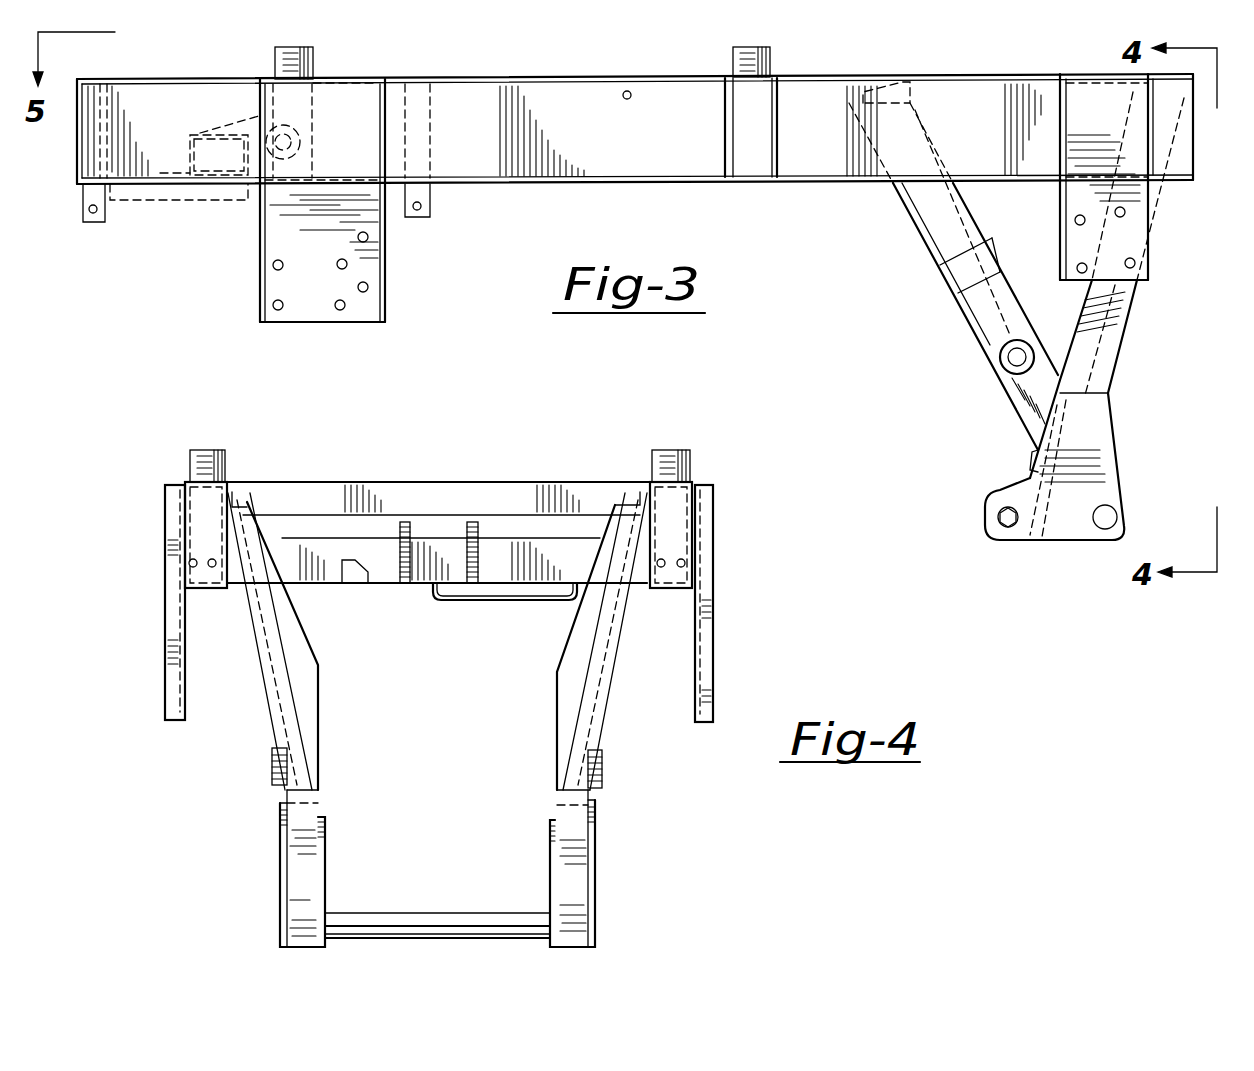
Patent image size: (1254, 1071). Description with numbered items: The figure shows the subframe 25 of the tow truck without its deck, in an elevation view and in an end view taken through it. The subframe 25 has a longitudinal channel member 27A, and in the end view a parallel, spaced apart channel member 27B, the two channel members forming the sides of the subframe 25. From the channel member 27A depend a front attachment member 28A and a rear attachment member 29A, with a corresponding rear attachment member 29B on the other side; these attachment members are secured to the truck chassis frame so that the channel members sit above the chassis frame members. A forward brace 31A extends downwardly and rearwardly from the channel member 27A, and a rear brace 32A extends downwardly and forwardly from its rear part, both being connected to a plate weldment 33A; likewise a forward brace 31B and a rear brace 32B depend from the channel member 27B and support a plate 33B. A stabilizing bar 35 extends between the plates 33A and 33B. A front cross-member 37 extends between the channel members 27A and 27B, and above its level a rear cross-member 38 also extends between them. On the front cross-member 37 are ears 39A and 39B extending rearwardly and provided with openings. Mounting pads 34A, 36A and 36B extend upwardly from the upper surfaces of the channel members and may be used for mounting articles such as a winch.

In FIG. 3, the subframe 25 is at (826, 194).
In FIG. 4, the subframe 25 is at (613, 448).
In FIG. 3, the longitudinal channel member 27A is at (673, 152).
In FIG. 4, the longitudinal channel member 27A is at (185, 484).
In FIG. 4, the channel member 27B is at (678, 502).
In FIG. 3, the front attachment member 28A is at (370, 285).
In FIG. 3, the rear attachment member 29A is at (1113, 245).
In FIG. 4, the rear attachment member 29A is at (172, 697).
In FIG. 4, the rear attachment member 29B is at (705, 668).
In FIG. 3, the forward brace 31A is at (993, 307).
In FIG. 4, the forward brace 31A is at (312, 660).
In FIG. 4, the forward brace 31B is at (575, 645).
In FIG. 3, the rear brace 32A is at (1097, 360).
In FIG. 4, the rear brace 32A is at (268, 694).
In FIG. 4, the rear brace 32B is at (600, 707).
In FIG. 3, the plate weldment 33A is at (1105, 460).
In FIG. 4, the plate weldment 33A is at (288, 885).
In FIG. 4, the plate 33B is at (575, 892).
In FIG. 3, the mounting pad 34A is at (315, 66).
In FIG. 4, the stabilizing bar 35 is at (405, 915).
In FIG. 3, the mounting pad 36A is at (771, 63).
In FIG. 4, the mounting pad 36A is at (222, 452).
In FIG. 4, the mounting pad 36B is at (673, 452).
In FIG. 3, the front cross-member 37 is at (179, 212).
In FIG. 4, the front cross-member 37 is at (385, 578).
In FIG. 3, the rear cross-member 38 is at (915, 92).
In FIG. 4, the rear cross-member 38 is at (463, 498).
In FIG. 3, the ear 39A is at (204, 104).
In FIG. 4, the ear 39A is at (402, 590).
In FIG. 3, the ear 39B is at (211, 144).
In FIG. 4, the ear 39B is at (478, 568).